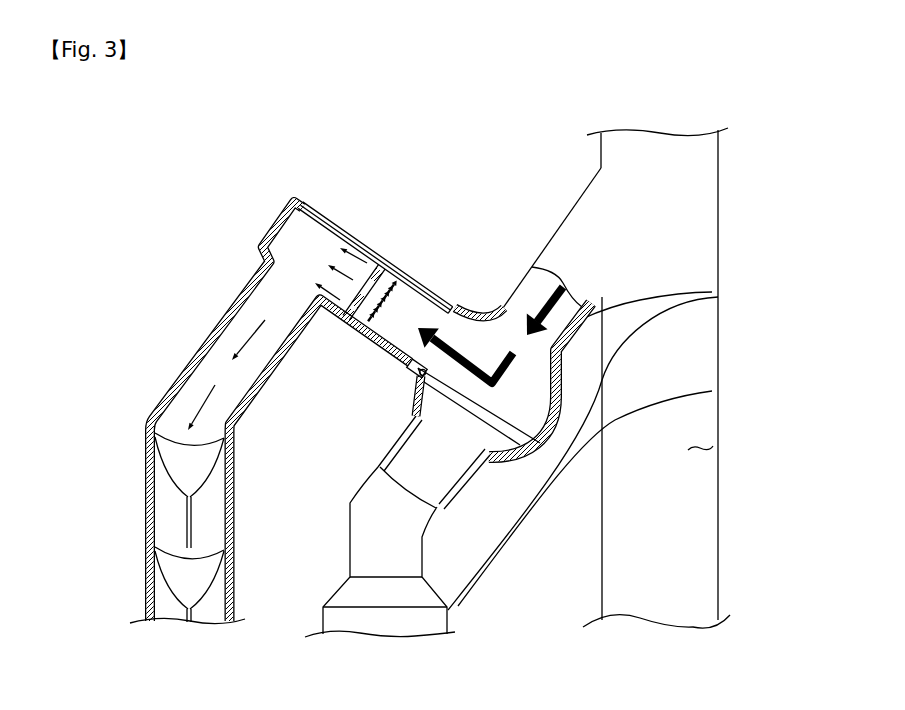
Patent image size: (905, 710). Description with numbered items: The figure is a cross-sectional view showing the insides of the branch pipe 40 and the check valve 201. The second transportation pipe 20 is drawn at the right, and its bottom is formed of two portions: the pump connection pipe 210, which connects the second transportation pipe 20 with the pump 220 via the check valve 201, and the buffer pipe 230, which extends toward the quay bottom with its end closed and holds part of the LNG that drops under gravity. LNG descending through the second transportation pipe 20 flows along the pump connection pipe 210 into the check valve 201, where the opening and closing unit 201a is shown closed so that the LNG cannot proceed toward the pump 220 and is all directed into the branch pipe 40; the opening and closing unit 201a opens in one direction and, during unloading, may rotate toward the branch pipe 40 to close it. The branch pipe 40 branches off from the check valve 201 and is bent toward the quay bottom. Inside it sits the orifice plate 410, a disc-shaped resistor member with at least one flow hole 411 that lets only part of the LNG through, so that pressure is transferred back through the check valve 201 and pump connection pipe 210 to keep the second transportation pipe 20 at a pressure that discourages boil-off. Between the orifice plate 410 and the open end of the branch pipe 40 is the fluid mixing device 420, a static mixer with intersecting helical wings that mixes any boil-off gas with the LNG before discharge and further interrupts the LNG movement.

The second transportation pipe 20 is at (776, 293).
The branch pipe 40 is at (330, 210).
The check valve 201 is at (477, 304).
The opening and closing unit 201a is at (467, 398).
The pump connection pipe 210 is at (712, 292).
The pump 220 is at (712, 391).
The buffer pipe 230 is at (713, 446).
The orifice plate 410 is at (377, 262).
The flow hole 411 is at (360, 286).
The fluid mixing device 420 is at (175, 463).